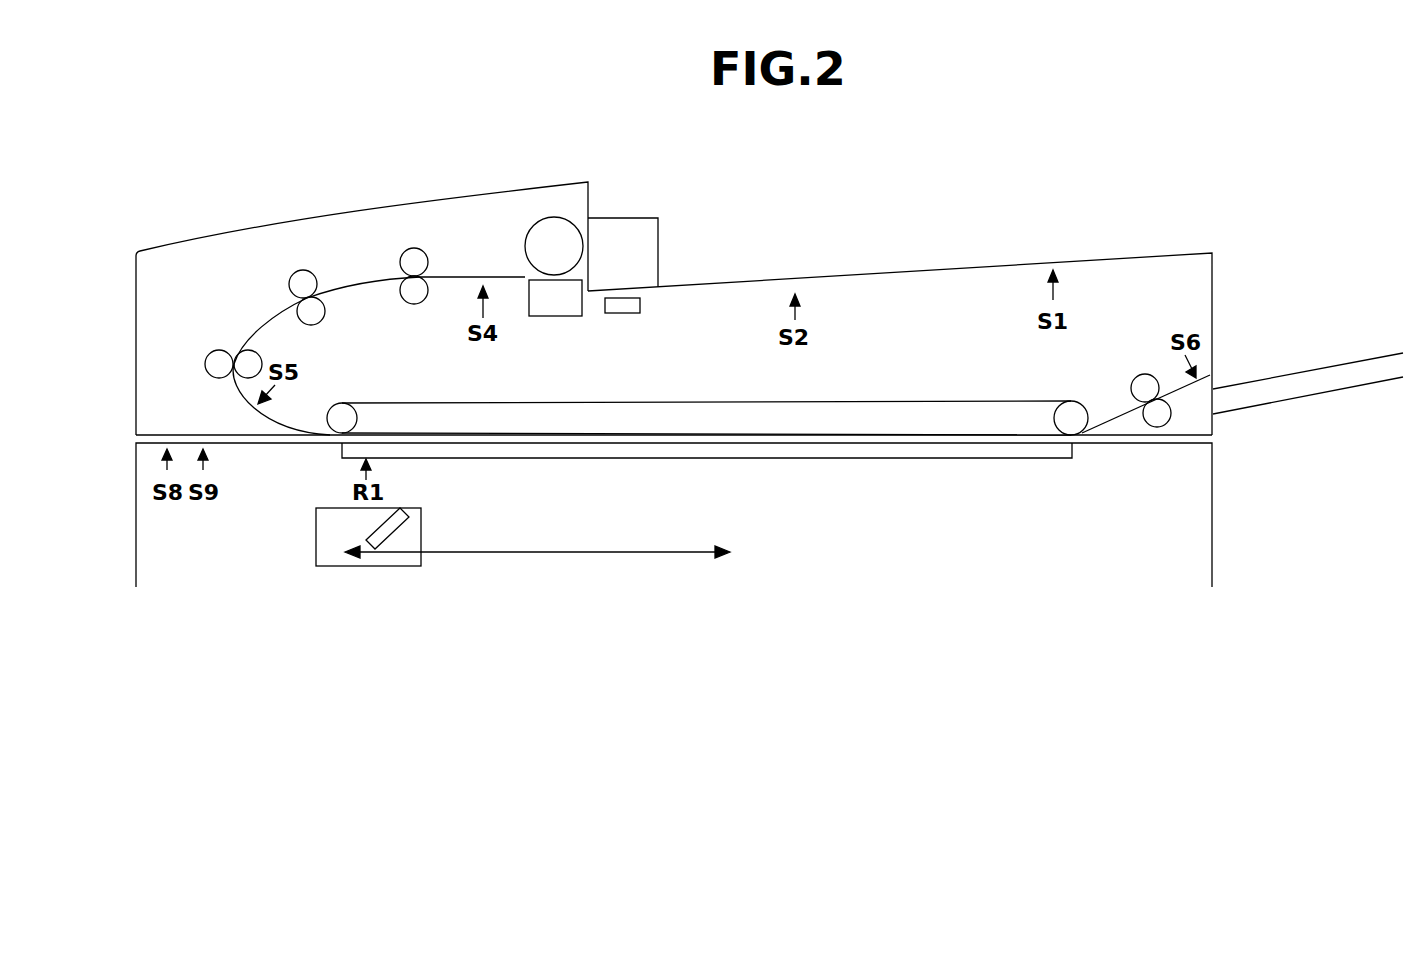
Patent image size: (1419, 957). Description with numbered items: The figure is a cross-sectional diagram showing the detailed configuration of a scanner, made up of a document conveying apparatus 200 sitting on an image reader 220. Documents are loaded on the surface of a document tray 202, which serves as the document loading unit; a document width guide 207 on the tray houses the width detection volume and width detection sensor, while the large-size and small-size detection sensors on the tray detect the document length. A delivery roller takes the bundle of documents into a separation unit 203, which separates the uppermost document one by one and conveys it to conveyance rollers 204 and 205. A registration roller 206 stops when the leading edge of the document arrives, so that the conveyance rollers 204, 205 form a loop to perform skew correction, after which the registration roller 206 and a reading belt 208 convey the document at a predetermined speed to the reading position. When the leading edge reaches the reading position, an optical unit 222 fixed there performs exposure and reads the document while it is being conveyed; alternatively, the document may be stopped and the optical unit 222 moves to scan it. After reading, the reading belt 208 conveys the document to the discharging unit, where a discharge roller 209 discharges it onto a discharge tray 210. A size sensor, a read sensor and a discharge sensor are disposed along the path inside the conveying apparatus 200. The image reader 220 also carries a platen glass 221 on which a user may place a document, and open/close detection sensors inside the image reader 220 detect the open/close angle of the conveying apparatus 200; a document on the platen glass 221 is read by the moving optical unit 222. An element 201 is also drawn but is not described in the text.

The document conveying apparatus 200 is at (460, 196).
The sensor 201 is at (622, 313).
The document tray 202 is at (924, 270).
The separation unit 203 is at (555, 316).
The conveyance roller 204 is at (414, 305).
The conveyance roller 205 is at (310, 271).
The registration roller 206 is at (222, 350).
The document width guide 207 is at (638, 218).
The reading belt 208 is at (692, 400).
The discharge roller 209 is at (1136, 374).
The discharge tray 210 is at (1300, 372).
The image reader 220 is at (1213, 509).
The platen glass 221 is at (918, 462).
The optical unit 222 is at (421, 530).